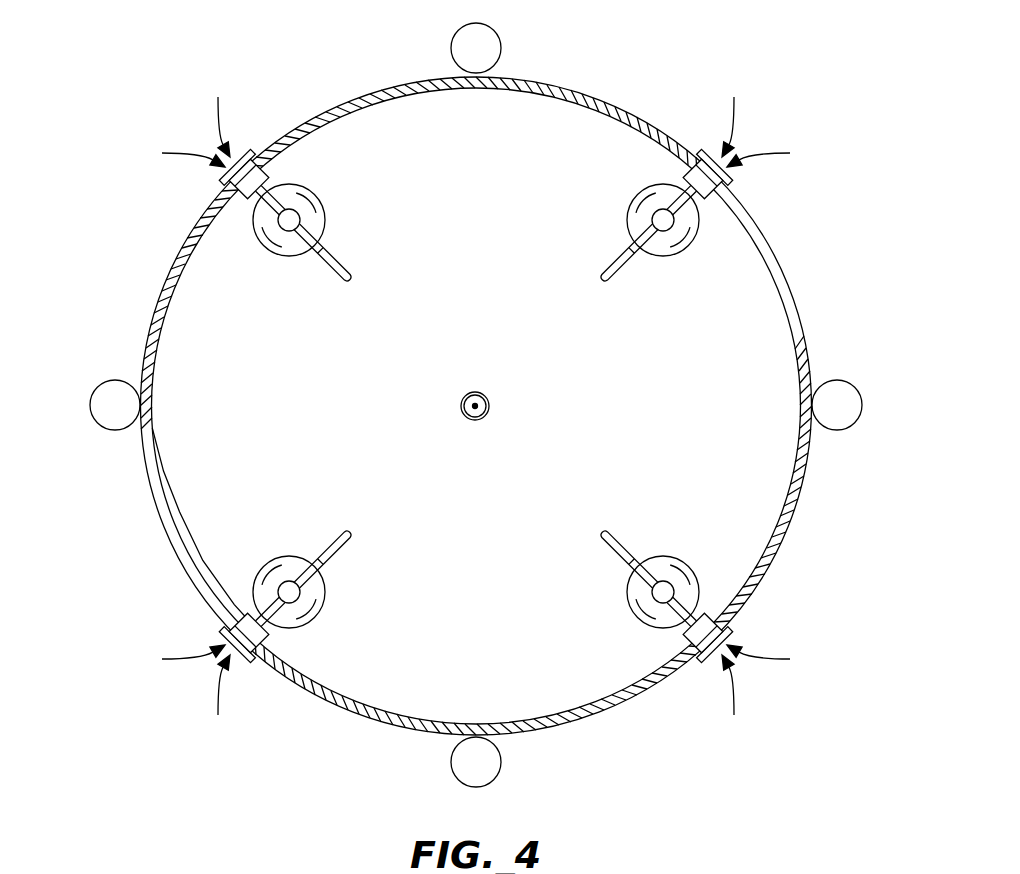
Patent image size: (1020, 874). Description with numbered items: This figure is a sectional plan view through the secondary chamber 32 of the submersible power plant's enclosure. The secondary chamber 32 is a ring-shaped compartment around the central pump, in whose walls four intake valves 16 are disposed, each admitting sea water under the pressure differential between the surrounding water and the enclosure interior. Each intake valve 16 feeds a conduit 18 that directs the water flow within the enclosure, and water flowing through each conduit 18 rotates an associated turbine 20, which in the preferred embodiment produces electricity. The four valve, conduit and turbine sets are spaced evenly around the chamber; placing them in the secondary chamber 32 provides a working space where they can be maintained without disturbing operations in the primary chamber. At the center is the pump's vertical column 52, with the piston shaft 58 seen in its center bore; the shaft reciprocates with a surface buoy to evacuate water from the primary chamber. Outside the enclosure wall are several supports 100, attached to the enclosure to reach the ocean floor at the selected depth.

The support 100 is at (503, 56).
The secondary chamber 32 is at (760, 283).
The vertical column 52 is at (478, 394).
The piston shaft 58 is at (473, 418).
The intake valve 16 is at (733, 626).
The conduit 18 is at (612, 553).
The turbine 20 is at (667, 557).